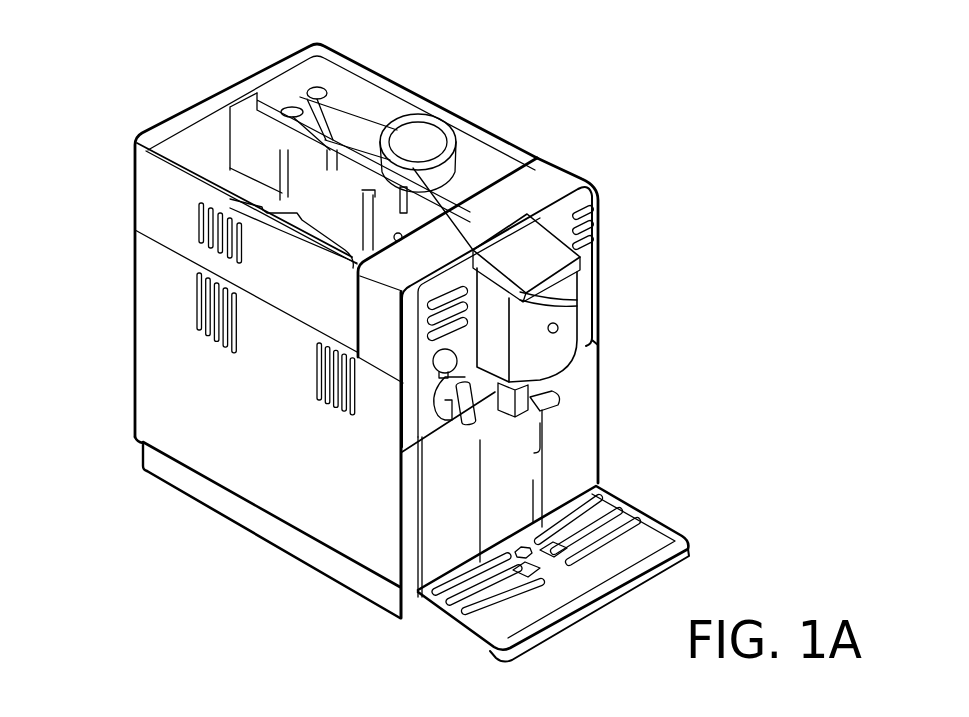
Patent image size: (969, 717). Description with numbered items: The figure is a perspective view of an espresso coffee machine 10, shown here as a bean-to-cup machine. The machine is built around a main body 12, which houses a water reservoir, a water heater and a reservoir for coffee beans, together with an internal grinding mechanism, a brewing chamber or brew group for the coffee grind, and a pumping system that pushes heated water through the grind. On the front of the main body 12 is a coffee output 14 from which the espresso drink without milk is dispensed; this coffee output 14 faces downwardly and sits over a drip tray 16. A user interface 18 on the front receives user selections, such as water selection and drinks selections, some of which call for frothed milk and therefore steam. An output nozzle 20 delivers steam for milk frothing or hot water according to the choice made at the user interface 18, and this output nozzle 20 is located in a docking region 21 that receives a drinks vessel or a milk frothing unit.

The espresso coffee machine 10 is at (546, 60).
The main body 12 is at (134, 304).
The coffee output 14 is at (540, 426).
The drip tray 16 is at (662, 530).
The user interface 18 is at (606, 216).
The output nozzle 20 is at (458, 422).
The docking region 21 is at (458, 533).